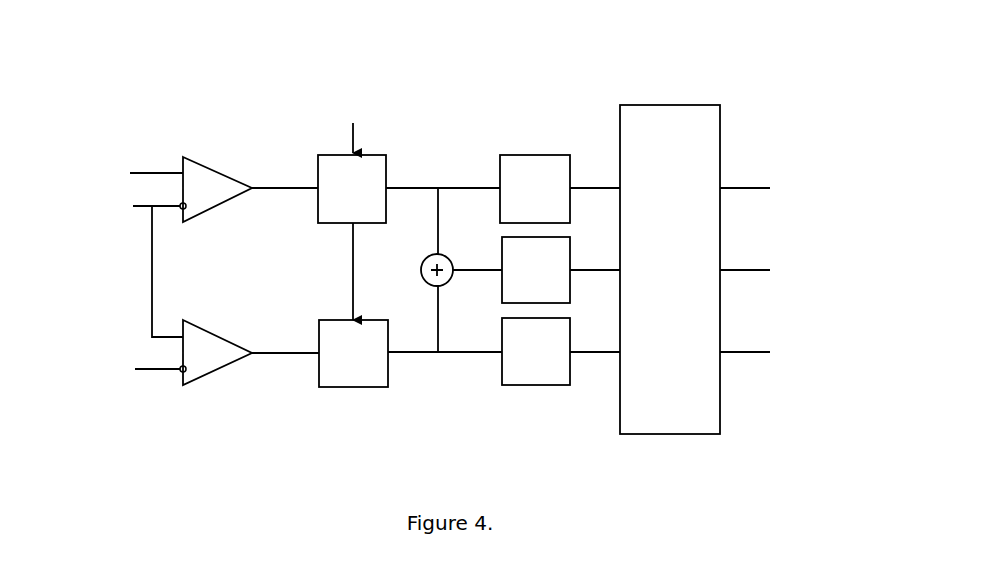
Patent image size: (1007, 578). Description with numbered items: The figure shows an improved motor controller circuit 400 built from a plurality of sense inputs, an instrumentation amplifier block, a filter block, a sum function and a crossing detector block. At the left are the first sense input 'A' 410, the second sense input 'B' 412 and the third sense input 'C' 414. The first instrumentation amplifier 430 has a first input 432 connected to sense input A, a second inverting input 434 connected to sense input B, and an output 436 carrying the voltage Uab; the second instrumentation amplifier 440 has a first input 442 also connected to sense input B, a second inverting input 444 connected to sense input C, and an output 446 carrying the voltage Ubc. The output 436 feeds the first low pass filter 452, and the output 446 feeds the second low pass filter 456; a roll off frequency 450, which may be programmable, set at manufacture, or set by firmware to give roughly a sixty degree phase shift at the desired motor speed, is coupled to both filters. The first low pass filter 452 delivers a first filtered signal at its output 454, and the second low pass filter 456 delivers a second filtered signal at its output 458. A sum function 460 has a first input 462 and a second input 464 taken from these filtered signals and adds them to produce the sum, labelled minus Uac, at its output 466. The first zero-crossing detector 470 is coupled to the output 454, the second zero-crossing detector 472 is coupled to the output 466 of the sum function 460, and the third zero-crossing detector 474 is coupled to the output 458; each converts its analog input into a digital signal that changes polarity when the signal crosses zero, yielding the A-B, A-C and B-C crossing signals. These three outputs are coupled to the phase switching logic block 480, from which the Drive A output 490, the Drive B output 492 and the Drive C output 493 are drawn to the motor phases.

The motor controller circuit 400 is at (93, 98).
The first sense input 'A' 410 is at (91, 163).
The second sense input 'B' 412 is at (91, 215).
The third sense input 'C' 414 is at (91, 359).
The first instrumentation amplifier 430 is at (217, 198).
The first input 432 is at (156, 168).
The second inverting input 434 is at (159, 212).
The output 436 is at (283, 187).
The second instrumentation amplifier 440 is at (217, 362).
The first input 442 is at (171, 331).
The second inverting input 444 is at (160, 376).
The output 446 is at (284, 350).
The roll off frequency 450 is at (350, 113).
The first low pass filter 452 is at (352, 189).
The output 454 is at (443, 183).
The second low pass filter 456 is at (353, 353).
The output 458 is at (445, 346).
The sum function 460 is at (424, 270).
The first input 462 is at (426, 221).
The second input 464 is at (426, 319).
The output 466 is at (477, 267).
The first zero-crossing detector 470 is at (560, 189).
The second zero-crossing detector 472 is at (561, 270).
The third zero-crossing detector 474 is at (561, 351).
The phase switching logic block 480 is at (670, 269).
The Drive A output 490 is at (783, 179).
The Drive B output 492 is at (783, 262).
The Drive C output 493 is at (783, 342).